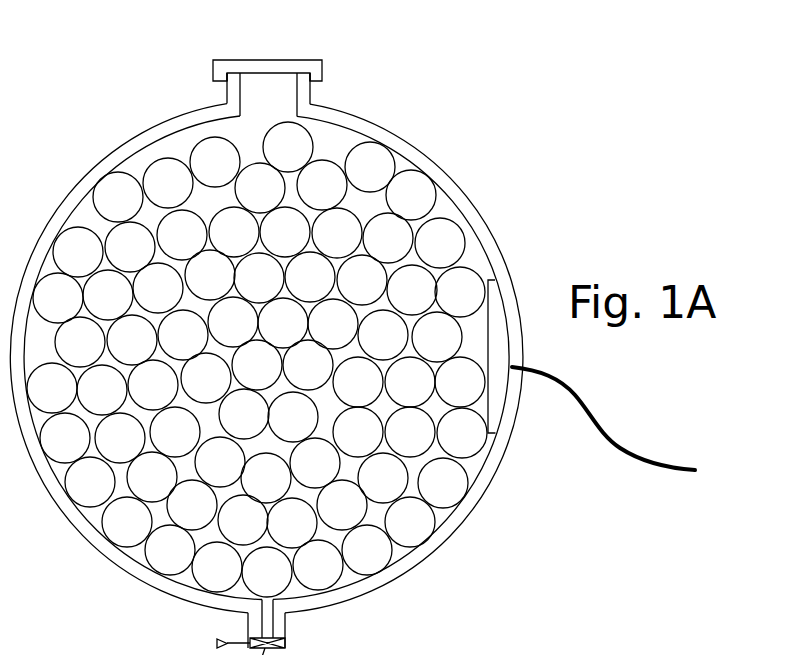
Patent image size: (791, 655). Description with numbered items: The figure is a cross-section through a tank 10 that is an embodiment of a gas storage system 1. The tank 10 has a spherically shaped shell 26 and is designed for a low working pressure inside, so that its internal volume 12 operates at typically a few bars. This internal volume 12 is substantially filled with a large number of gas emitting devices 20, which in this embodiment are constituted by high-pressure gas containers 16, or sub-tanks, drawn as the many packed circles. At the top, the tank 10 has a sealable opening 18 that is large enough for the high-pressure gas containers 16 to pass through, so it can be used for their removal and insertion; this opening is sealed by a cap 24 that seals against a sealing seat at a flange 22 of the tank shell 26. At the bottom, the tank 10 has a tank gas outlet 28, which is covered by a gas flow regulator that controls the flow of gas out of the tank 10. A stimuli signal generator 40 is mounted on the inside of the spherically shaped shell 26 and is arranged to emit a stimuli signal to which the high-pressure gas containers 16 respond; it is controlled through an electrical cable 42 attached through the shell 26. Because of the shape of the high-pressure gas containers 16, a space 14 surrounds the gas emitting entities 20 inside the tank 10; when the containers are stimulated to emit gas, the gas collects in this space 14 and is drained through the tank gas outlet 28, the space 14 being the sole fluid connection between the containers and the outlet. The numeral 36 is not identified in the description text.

The gas storage system 1 is at (540, 146).
The tank 10 is at (156, 132).
The internal volume 12 is at (330, 147).
The space 14 is at (332, 537).
The high-pressure gas containers 16 is at (160, 558).
The sealable opening 18 is at (272, 88).
The gas emitting devices 20 is at (448, 243).
The flange 22 is at (233, 80).
The cap 24 is at (226, 68).
The spherically shaped shell 26 is at (397, 143).
The tank gas outlet 28 is at (268, 620).
The controller 36 is at (715, 646).
The stimuli signal generator 40 is at (497, 408).
The electrical cable 42 is at (637, 459).